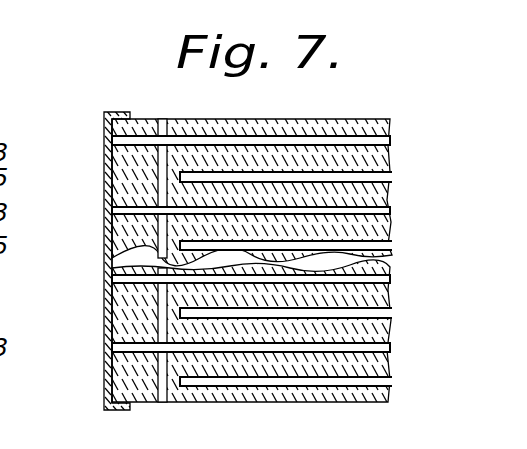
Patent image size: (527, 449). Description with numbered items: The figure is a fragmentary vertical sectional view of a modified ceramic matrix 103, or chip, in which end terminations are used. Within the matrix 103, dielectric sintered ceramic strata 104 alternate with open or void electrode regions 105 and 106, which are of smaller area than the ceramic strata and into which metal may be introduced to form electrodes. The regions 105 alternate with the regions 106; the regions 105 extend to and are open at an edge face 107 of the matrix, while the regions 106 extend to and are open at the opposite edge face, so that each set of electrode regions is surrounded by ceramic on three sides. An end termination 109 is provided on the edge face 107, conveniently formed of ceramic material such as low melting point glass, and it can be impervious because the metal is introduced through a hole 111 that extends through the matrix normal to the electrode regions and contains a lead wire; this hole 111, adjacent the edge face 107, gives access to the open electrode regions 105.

The ceramic matrix 103 is at (240, 220).
The dielectric sintered ceramic strata 104 is at (297, 223).
The open electrode regions 105 is at (394, 139).
The open electrode regions 106 is at (395, 177).
The edge face 107 is at (104, 249).
The end termination 109 is at (104, 327).
The hole 111 is at (163, 118).